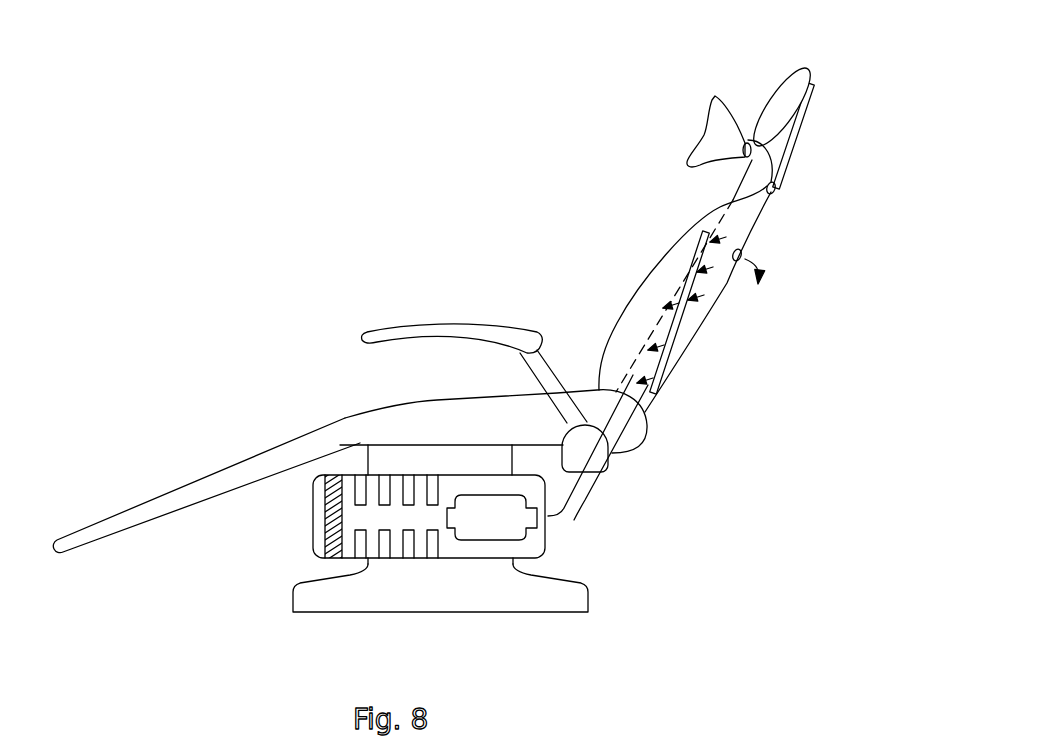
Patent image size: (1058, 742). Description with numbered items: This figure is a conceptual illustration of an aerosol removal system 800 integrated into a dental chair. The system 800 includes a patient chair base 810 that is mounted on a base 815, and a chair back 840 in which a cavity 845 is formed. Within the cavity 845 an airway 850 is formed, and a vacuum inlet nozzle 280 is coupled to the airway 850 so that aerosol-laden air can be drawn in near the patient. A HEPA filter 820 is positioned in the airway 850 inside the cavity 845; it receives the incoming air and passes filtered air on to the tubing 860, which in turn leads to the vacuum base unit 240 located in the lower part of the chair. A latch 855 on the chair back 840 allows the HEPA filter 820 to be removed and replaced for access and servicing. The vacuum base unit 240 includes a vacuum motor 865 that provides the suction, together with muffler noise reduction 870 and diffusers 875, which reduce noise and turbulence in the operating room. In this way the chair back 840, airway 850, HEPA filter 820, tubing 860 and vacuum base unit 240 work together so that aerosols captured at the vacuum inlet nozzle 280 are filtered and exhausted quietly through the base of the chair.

The aerosol removal system 800 is at (208, 173).
The vacuum inlet nozzle 280 is at (719, 85).
The chair back 840 is at (782, 103).
The airway 850 is at (825, 183).
The latch 855 is at (817, 250).
The cavity 845 is at (670, 287).
The HEPA filter 820 is at (680, 327).
The patient chair base 810 is at (327, 432).
The tubing 860 is at (583, 487).
The vacuum base unit 240 is at (622, 526).
The base 815 is at (424, 473).
The diffusers 875 is at (313, 516).
The vacuum motor 865 is at (513, 530).
The muffler noise reduction 870 is at (392, 572).